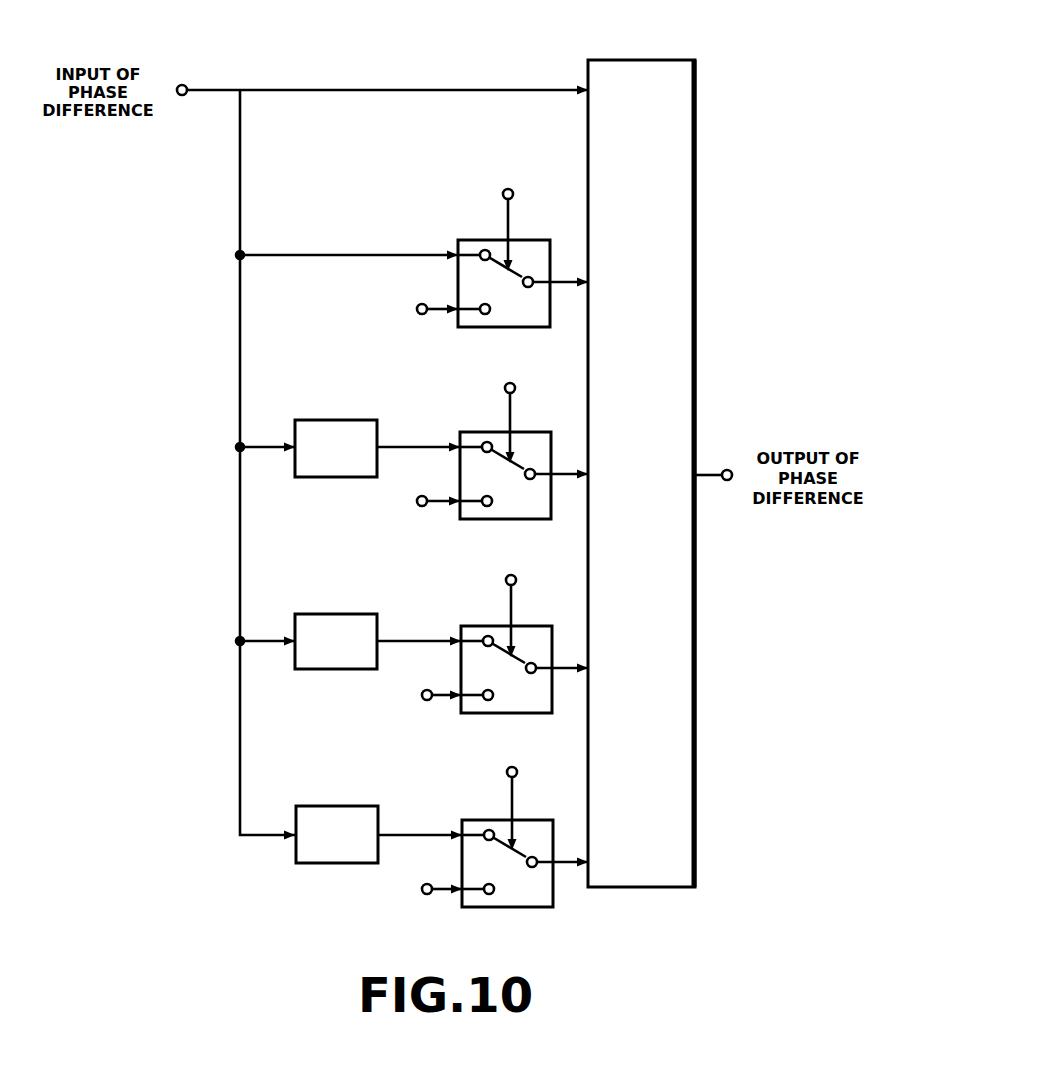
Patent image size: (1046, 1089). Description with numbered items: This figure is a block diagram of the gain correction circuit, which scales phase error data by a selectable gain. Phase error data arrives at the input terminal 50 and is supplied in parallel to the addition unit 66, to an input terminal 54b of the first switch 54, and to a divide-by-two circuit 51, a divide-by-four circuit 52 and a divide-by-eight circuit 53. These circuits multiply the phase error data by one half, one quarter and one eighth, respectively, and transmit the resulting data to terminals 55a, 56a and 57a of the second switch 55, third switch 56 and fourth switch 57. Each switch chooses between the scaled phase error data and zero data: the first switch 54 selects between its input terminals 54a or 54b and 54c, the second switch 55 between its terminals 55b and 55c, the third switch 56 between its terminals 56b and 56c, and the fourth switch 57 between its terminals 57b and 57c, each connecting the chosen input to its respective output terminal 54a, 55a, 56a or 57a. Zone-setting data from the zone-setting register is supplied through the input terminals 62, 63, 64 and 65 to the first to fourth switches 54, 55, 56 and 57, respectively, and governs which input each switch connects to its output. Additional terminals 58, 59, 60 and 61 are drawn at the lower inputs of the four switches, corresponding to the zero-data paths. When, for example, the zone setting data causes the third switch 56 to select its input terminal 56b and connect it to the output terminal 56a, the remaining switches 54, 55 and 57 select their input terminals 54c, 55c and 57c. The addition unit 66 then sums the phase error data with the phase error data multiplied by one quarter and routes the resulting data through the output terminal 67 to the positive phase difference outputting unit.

The input terminal 50 is at (182, 85).
The divide-by-2 circuit 51 is at (346, 430).
The divide-by-4 circuit 52 is at (344, 620).
The divide-by-8 circuit 53 is at (346, 812).
The first switch 54 is at (481, 257).
The output terminal of first switch 54a is at (531, 276).
The input terminal of first switch 54b is at (484, 250).
The input terminal of first switch 54c is at (486, 315).
The second switch 55 is at (481, 451).
The output terminal of second switch 55a is at (533, 468).
The input terminal of second switch 55b is at (486, 442).
The input terminal of second switch 55c is at (487, 507).
The third switch 56 is at (483, 643).
The output terminal of third switch 56a is at (534, 662).
The input terminal of third switch 56b is at (487, 636).
The input terminal of third switch 56c is at (488, 701).
The fourth switch 57 is at (483, 837).
The output terminal of fourth switch 57a is at (535, 856).
The input terminal of fourth switch 57b is at (488, 830).
The input terminal of fourth switch 57c is at (487, 895).
The terminal 58 is at (418, 306).
The terminal 59 is at (418, 498).
The terminal 60 is at (423, 691).
The terminal 61 is at (423, 885).
The input terminal 62 is at (512, 189).
The input terminal 63 is at (514, 384).
The input terminal 64 is at (515, 576).
The input terminal 65 is at (516, 768).
The addition unit 66 is at (638, 64).
The output terminal 67 is at (728, 470).